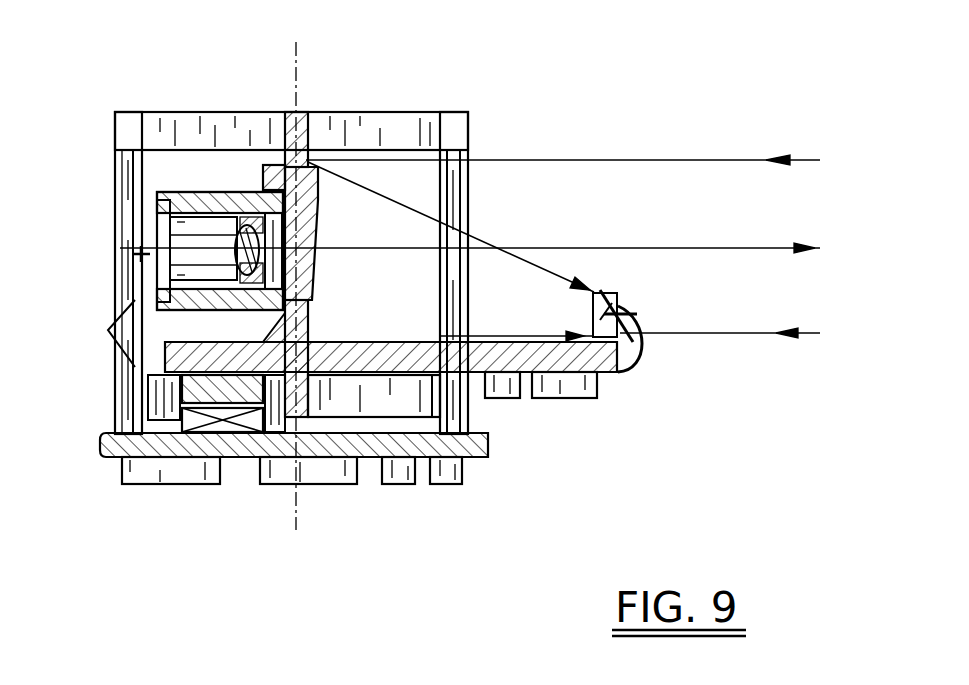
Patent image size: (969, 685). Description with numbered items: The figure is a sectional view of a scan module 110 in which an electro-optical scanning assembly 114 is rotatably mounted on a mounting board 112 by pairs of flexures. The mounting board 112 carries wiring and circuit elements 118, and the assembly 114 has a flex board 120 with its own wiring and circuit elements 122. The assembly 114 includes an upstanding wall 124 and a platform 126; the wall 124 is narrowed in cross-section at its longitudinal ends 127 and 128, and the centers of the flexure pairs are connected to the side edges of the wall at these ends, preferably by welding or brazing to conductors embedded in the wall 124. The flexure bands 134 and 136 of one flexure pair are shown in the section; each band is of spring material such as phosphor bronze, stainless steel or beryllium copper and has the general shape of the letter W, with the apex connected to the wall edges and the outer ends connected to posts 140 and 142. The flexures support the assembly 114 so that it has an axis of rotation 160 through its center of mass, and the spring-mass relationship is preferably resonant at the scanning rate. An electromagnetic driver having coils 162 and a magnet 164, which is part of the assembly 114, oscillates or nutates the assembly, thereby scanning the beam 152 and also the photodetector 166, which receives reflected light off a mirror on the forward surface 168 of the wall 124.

The scan module 110 is at (611, 57).
The mounting board 112 is at (103, 446).
The electro-optical scanning assembly 114 is at (625, 358).
The wiring and circuit elements 118 is at (155, 486).
The flex board 120 is at (642, 345).
The wiring and circuit elements 122 is at (503, 398).
The upstanding wall 124 is at (280, 112).
The platform 126 is at (556, 340).
The longitudinal end 127 is at (316, 118).
The longitudinal end 128 is at (312, 398).
The flexure band 134 is at (394, 130).
The flexure band 136 is at (408, 398).
The post 140 is at (468, 128).
The post 142 is at (115, 140).
The beam 152 is at (696, 248).
The axis of rotation 160 is at (300, 53).
The coils 162 is at (236, 434).
The magnet 164 is at (165, 395).
The photodetector 166 is at (610, 295).
The forward surface 168 is at (316, 204).